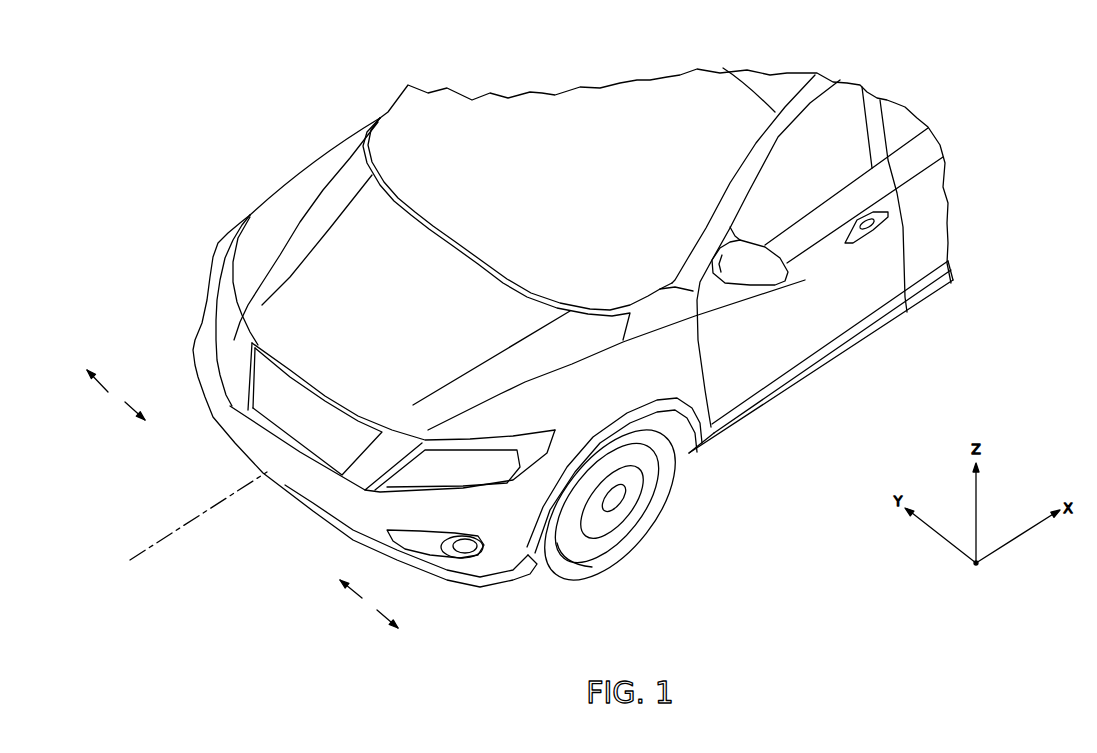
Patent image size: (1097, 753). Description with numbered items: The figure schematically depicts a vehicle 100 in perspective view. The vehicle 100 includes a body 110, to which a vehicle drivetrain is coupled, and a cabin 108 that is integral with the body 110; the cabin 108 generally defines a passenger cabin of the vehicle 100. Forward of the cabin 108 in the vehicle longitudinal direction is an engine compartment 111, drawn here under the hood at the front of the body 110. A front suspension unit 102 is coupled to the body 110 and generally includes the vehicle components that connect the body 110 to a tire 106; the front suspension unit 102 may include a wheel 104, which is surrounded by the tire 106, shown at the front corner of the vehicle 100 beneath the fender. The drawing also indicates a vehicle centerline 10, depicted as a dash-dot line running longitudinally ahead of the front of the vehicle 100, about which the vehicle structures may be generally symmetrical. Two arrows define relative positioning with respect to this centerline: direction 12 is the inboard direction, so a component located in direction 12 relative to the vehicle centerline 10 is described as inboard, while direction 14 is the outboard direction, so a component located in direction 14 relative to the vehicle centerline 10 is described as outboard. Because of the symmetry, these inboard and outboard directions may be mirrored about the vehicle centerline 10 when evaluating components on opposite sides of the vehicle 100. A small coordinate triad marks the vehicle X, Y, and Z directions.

The vehicle 100 is at (543, 350).
The body 110 is at (519, 245).
The engine compartment 111 is at (307, 262).
The cabin 108 is at (665, 157).
The front suspension unit 102 is at (625, 533).
The wheel 104 is at (607, 553).
The tire 106 is at (672, 497).
The vehicle centerline 10 is at (148, 550).
The inboard direction 12 is at (133, 412).
The outboard direction 14 is at (98, 381).